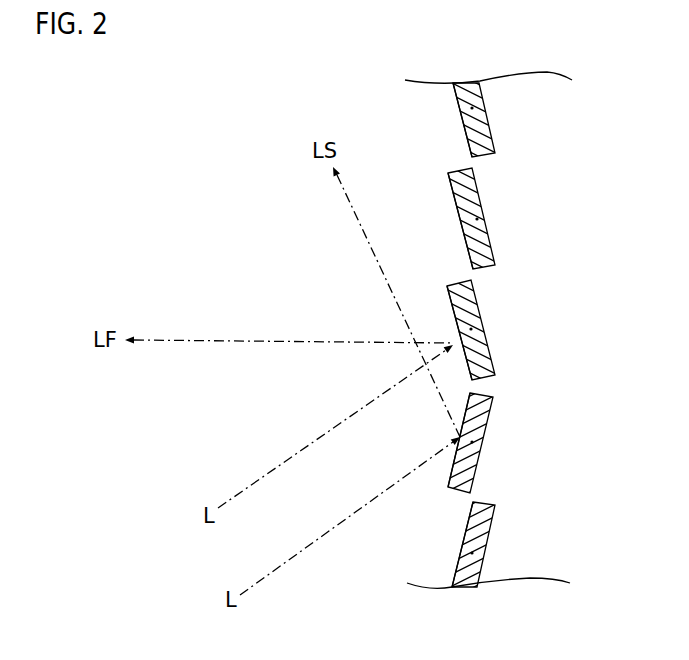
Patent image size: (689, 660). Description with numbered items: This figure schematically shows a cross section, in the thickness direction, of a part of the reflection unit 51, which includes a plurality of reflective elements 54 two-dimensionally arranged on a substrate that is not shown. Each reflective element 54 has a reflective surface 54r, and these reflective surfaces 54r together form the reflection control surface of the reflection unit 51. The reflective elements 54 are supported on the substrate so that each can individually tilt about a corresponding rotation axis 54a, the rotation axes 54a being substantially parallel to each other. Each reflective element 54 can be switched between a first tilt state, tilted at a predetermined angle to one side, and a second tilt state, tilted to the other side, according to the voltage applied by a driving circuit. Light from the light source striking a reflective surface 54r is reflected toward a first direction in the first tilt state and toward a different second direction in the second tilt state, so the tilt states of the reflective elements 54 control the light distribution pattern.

The reflection unit 51 is at (366, 109).
The reflective element 54 is at (480, 135).
The rotation axis 54a is at (473, 108).
The reflective surface 54r is at (460, 113).